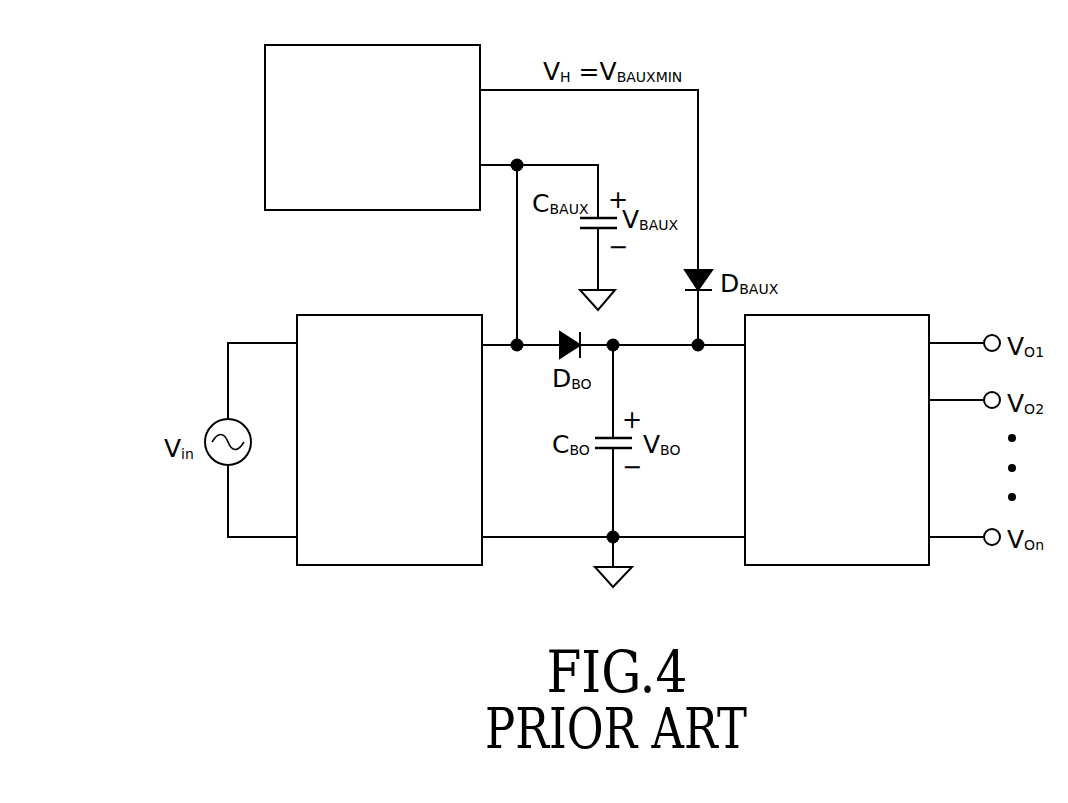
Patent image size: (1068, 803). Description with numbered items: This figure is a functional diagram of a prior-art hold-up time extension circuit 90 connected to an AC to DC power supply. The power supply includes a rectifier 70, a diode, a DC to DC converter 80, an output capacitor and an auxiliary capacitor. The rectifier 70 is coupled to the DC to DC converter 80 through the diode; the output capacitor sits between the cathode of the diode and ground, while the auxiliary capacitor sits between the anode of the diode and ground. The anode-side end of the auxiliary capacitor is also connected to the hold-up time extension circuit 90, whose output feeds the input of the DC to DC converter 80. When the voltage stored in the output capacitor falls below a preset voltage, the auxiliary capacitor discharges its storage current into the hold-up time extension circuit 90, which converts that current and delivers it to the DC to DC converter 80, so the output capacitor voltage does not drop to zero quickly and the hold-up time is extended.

The rectifier 70 is at (413, 555).
The DC to DC converter 80 is at (848, 555).
The hold-up time extension circuit 90 is at (382, 203).